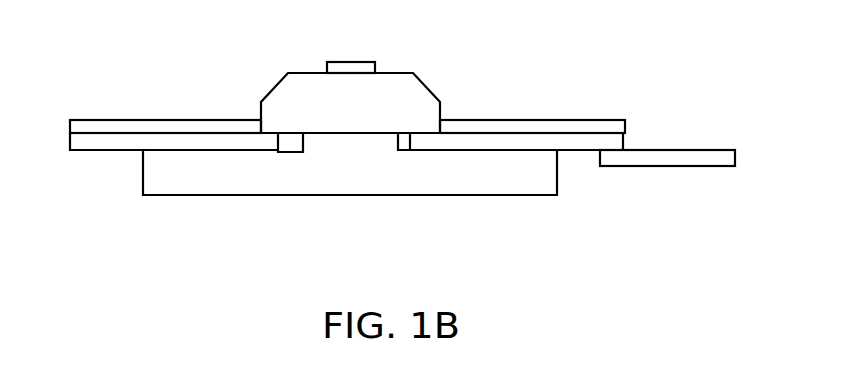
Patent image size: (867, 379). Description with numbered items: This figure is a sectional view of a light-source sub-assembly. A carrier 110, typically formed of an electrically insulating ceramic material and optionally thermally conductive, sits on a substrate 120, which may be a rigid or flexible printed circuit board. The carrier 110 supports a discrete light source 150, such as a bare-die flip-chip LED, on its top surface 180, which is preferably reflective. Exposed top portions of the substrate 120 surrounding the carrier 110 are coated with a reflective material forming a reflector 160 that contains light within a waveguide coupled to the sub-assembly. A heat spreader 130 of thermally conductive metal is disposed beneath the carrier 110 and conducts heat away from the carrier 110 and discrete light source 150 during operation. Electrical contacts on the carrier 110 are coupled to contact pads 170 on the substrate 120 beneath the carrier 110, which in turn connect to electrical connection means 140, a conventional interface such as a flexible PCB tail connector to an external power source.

The carrier 110 is at (282, 100).
The substrate 120 is at (617, 142).
The heat spreader 130 is at (175, 185).
The electrical connection means 140 is at (705, 161).
The discrete light source 150 is at (374, 62).
The reflector 160 is at (88, 128).
The contact pads 170 is at (277, 153).
The top surface 180 is at (305, 72).